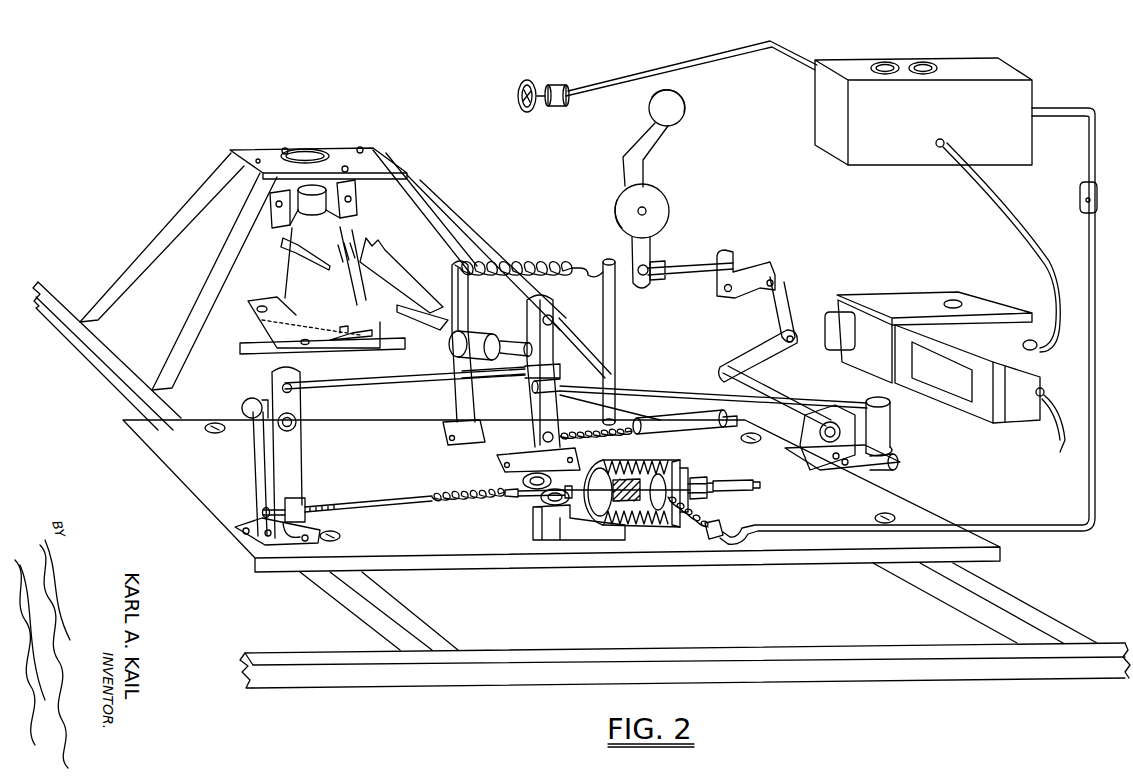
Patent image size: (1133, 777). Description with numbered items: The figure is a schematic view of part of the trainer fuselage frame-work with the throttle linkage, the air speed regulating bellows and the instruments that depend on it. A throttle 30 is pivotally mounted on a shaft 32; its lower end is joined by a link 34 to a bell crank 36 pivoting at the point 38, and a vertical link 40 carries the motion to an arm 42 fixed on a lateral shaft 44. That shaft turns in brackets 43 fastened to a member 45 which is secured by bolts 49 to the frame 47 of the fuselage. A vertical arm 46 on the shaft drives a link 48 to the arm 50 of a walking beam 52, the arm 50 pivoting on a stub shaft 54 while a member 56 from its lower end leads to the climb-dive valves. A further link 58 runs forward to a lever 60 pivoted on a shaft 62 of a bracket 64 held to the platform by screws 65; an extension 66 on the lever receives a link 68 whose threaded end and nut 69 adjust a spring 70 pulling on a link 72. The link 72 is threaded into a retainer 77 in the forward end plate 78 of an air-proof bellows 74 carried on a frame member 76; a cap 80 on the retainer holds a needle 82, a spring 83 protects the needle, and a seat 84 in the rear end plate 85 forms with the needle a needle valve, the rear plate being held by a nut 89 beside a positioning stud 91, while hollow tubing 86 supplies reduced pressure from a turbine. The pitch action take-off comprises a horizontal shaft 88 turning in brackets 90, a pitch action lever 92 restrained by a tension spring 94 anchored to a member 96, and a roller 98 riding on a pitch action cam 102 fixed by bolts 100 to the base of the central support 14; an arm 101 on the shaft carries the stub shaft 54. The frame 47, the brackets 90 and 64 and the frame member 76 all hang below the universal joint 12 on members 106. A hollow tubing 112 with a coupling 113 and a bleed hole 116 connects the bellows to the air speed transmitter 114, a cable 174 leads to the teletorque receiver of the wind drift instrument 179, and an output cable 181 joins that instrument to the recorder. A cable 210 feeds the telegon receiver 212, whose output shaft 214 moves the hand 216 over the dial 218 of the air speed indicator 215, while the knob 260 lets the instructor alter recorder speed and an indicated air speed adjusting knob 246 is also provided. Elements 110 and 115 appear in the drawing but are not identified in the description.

The universal joint 12 is at (364, 200).
The central support 14 is at (307, 290).
The throttle 30 is at (645, 148).
The shaft 32 is at (647, 211).
The link 34 is at (681, 261).
The bell crank 36 is at (735, 261).
The pivot point 38 is at (725, 292).
The vertical link 40 is at (780, 307).
The arm 42 is at (747, 358).
The brackets 43 is at (820, 417).
The shaft 44 is at (768, 388).
The member (platform) 45 is at (890, 497).
The vertical arm 46 is at (890, 432).
The frame 47 is at (963, 603).
The link 48 is at (678, 394).
The bolts 49 is at (215, 423).
The arm 50 is at (626, 390).
The walking beam 52 is at (564, 305).
The stub shaft 54 is at (555, 322).
The member 56 is at (708, 430).
The link 58 is at (397, 380).
The lever 60 is at (294, 467).
The shaft 62 is at (295, 418).
The bracket 64 is at (260, 467).
The screws 65 is at (248, 543).
The extension 66 is at (305, 505).
The link 68 is at (366, 503).
The nut 69 is at (285, 522).
The spring 70 is at (436, 492).
The link 72 is at (512, 499).
The air speed regulator bellows 74 is at (640, 523).
The frame member 76 is at (672, 530).
The retainer 77 is at (580, 519).
The forward end plate 78 is at (595, 470).
The cap 80 is at (623, 480).
The needle 82 is at (645, 463).
The spring 83 is at (618, 522).
The seat 84 is at (650, 523).
The rear end plate 85 is at (658, 474).
The hollow tubing 86 is at (745, 493).
The horizontal shaft 88 is at (470, 357).
The nut 89 is at (693, 480).
The brackets 90 is at (497, 458).
The positioning stud 91 is at (682, 468).
The pitch action lever 92 is at (460, 264).
The tension spring 94 is at (535, 260).
The member 96 is at (603, 260).
The roller 98 is at (406, 352).
The bolts 100 is at (302, 334).
The arm 101 is at (466, 383).
The pitch action cam 102 is at (370, 338).
The members 106 is at (440, 220).
The clevis 110 is at (590, 372).
The hollow tubing 112 is at (797, 531).
The coupling 113 is at (714, 540).
The air speed transmitter 114 is at (885, 175).
The cable 115 is at (702, 509).
The bleed hole 116 is at (1086, 203).
The cable 174 is at (982, 203).
The wind drift instrument 179 is at (899, 280).
The output cable 181 is at (1062, 433).
The cable 210 is at (738, 46).
The telegon receiver 212 is at (568, 85).
The output shaft 214 is at (543, 82).
The air speed indicator 215 is at (507, 71).
The hand 216 is at (519, 112).
The air speed indicator dial 218 is at (533, 112).
The indicated air speed adjusting knob 246 is at (884, 60).
The knob 260 is at (929, 60).